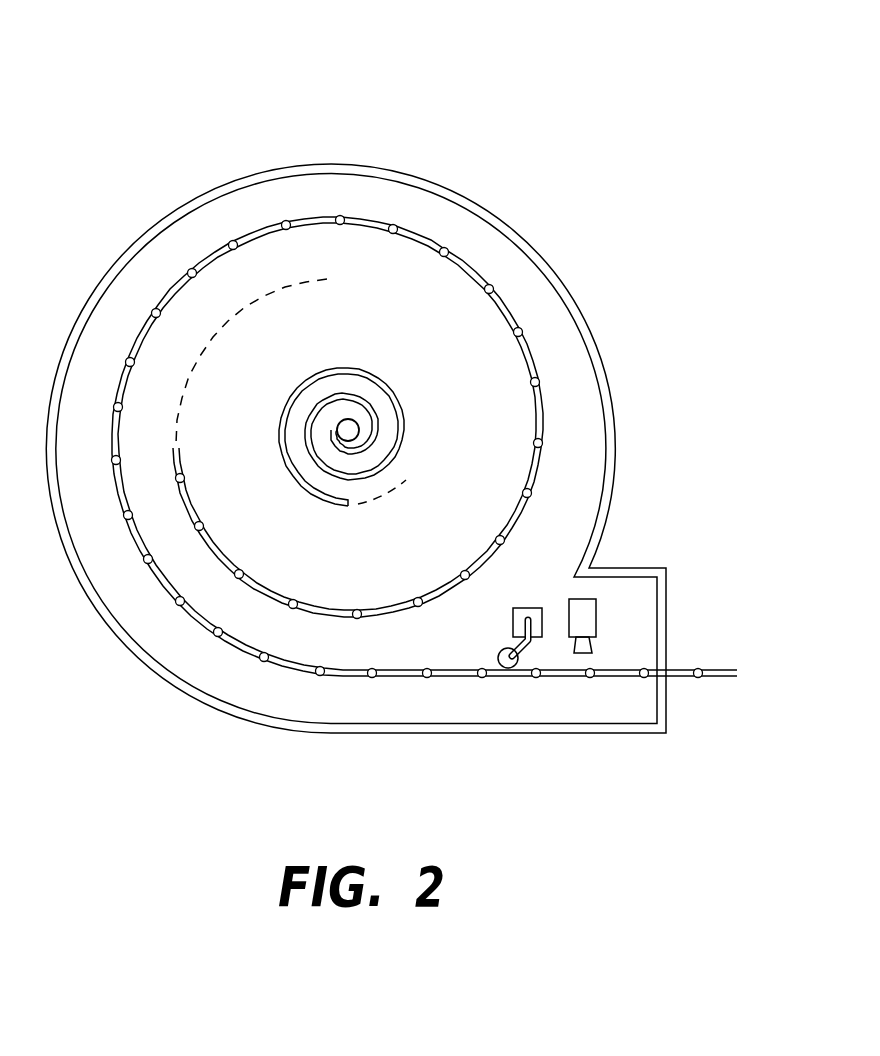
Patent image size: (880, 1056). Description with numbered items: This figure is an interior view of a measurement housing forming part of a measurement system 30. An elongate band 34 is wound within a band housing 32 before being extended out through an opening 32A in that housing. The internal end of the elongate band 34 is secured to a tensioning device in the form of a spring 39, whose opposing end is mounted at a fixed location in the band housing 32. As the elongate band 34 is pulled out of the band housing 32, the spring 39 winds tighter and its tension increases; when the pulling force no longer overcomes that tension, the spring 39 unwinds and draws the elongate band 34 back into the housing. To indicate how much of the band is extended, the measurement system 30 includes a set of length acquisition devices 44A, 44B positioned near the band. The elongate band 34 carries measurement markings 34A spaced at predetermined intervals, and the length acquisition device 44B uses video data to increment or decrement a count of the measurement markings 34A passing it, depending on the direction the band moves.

The measurement system 30 is at (356, 82).
The band housing 32 is at (614, 450).
The opening 32A is at (667, 670).
The elongate band 34 is at (347, 676).
The measurement markings 34A is at (425, 678).
The spring 39 is at (358, 374).
The length acquisition device 44A is at (514, 621).
The length acquisition device 44B is at (573, 612).